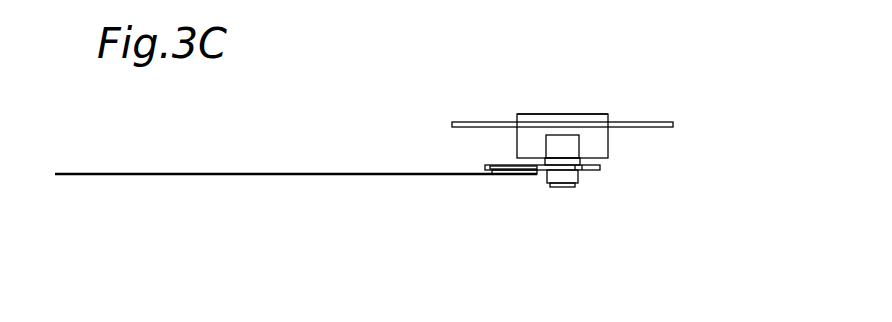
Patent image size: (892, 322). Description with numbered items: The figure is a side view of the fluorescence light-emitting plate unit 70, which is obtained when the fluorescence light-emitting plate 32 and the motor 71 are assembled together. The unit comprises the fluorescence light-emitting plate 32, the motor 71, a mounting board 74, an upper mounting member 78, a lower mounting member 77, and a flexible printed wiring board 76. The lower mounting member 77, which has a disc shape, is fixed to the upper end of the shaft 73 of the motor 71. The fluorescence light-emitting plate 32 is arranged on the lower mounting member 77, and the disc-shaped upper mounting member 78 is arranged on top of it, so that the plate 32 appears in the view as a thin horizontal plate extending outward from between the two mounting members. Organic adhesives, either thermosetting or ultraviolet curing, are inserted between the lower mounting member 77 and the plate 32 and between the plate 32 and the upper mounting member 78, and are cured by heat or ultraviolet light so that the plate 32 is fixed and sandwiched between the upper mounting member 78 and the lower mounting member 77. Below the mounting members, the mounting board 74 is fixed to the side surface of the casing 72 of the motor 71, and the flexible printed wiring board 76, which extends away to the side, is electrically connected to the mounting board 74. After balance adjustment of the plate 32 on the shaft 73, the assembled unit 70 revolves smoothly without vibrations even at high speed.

The fluorescence light-emitting plate unit 70 is at (703, 173).
The motor 71 is at (516, 150).
The casing 72 is at (556, 184).
The shaft 73 is at (562, 188).
The mounting board 74 is at (585, 171).
The flexible printed wiring board 76 is at (460, 175).
The lower mounting member 77 is at (603, 143).
The upper mounting member 78 is at (573, 120).
The fluorescence light-emitting plate 32 is at (680, 122).